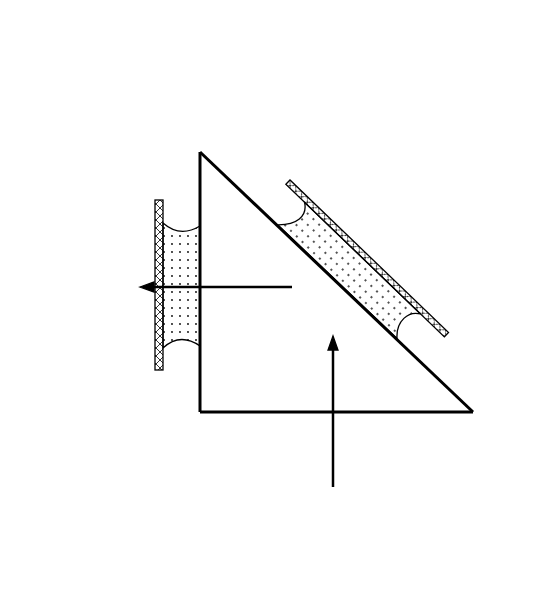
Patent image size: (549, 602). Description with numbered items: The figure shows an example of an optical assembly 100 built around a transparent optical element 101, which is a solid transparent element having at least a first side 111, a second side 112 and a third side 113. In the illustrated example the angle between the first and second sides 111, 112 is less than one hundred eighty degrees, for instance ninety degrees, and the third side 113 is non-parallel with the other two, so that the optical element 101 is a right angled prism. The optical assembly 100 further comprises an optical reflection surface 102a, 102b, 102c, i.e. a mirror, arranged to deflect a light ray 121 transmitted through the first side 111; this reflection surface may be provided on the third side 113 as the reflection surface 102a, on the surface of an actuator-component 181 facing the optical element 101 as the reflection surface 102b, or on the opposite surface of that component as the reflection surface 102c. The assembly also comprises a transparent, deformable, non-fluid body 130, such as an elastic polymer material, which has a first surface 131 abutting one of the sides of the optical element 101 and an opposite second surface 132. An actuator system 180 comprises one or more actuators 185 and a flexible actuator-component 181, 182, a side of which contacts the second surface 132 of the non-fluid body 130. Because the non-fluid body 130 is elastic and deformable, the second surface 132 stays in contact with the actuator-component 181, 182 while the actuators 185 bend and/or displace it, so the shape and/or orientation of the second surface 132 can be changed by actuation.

The optical assembly 100 is at (146, 44).
The transparent optical element 101 is at (209, 172).
The reflection surface 102a is at (210, 173).
The reflection surface 102b is at (290, 180).
The reflection surface 102c is at (358, 238).
The first side 111 is at (418, 418).
The second side 112 is at (198, 383).
The third side 113 is at (465, 400).
The light ray 121 is at (265, 290).
The non-fluid body 130 is at (177, 240).
The first surface 131 is at (202, 237).
The second surface 132 is at (155, 320).
The actuator system 180 is at (303, 144).
The actuator-component 181 is at (318, 203).
The actuator-component 182 is at (155, 252).
The actuators 185 is at (146, 212).